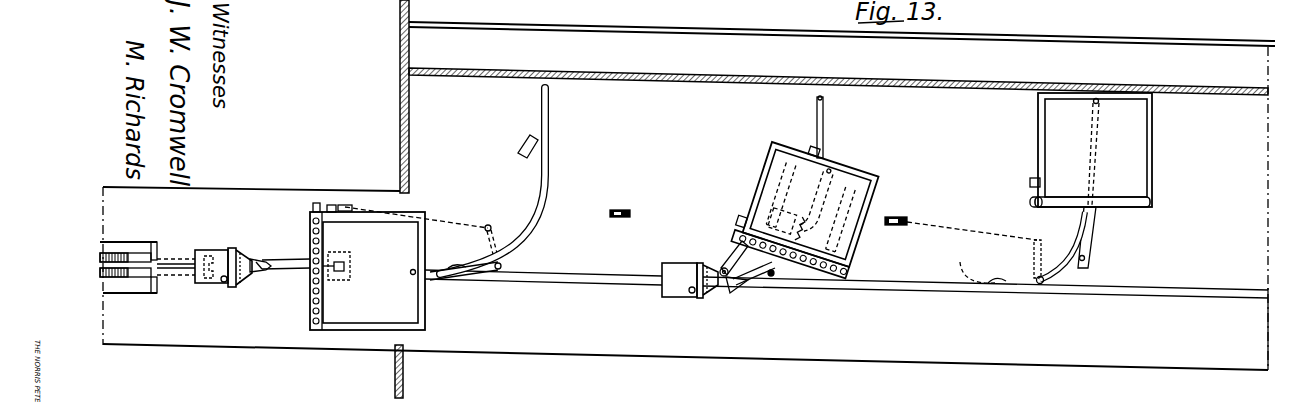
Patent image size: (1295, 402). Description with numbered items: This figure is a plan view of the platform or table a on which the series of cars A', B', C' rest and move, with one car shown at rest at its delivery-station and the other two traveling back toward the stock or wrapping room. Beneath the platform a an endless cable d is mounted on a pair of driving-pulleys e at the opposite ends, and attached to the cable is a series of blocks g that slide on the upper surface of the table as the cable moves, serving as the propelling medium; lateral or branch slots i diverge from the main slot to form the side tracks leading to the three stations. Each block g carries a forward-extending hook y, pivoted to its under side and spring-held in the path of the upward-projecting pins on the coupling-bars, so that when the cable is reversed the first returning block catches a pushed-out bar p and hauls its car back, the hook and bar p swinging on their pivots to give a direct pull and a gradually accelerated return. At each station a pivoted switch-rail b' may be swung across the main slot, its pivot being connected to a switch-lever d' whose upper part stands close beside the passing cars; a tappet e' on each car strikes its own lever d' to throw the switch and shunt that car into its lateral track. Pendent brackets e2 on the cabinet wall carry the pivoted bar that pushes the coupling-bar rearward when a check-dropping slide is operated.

The platform or table a is at (705, 133).
The driving-pulleys e is at (128, 248).
The endless cable d is at (176, 244).
The blocks g is at (213, 251).
The forward-extending hook y is at (263, 273).
The bar p is at (283, 259).
The car A' is at (367, 266).
The tappet e' is at (682, 194).
The switch-lever d' is at (689, 224).
The lateral or branch slots i is at (1067, 252).
The switch-rail b' is at (726, 285).
The car B' is at (816, 205).
The car C' is at (1112, 150).
The pendent brackets e2 is at (1030, 201).